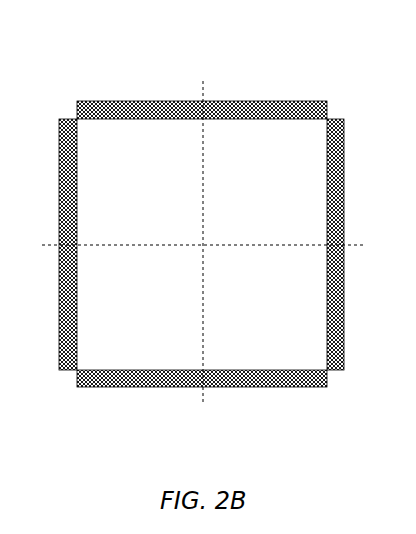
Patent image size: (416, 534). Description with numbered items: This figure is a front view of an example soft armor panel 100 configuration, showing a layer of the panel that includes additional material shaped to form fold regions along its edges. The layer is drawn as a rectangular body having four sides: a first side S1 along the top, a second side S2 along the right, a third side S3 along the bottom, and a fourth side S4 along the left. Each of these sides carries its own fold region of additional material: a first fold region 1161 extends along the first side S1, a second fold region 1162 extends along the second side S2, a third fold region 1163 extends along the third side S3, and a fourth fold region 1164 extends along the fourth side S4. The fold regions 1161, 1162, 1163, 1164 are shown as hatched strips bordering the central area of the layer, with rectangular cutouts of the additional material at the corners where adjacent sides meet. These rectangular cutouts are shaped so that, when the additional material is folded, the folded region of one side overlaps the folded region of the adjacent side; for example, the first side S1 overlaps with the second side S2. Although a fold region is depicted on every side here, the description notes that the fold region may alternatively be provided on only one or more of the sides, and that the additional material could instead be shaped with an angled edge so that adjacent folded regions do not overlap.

The soft armor panel 100 is at (134, 52).
The first fold region 1161 is at (246, 106).
The second fold region 1162 is at (336, 206).
The third fold region 1163 is at (235, 376).
The fourth fold region 1164 is at (67, 213).
The first side S1 is at (168, 101).
The second side S2 is at (345, 282).
The third side S3 is at (157, 388).
The fourth side S4 is at (58, 157).